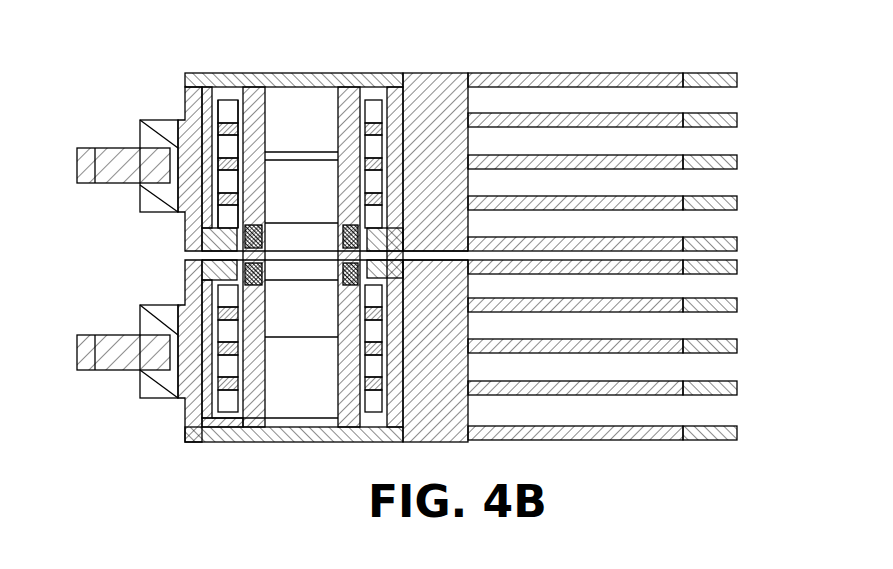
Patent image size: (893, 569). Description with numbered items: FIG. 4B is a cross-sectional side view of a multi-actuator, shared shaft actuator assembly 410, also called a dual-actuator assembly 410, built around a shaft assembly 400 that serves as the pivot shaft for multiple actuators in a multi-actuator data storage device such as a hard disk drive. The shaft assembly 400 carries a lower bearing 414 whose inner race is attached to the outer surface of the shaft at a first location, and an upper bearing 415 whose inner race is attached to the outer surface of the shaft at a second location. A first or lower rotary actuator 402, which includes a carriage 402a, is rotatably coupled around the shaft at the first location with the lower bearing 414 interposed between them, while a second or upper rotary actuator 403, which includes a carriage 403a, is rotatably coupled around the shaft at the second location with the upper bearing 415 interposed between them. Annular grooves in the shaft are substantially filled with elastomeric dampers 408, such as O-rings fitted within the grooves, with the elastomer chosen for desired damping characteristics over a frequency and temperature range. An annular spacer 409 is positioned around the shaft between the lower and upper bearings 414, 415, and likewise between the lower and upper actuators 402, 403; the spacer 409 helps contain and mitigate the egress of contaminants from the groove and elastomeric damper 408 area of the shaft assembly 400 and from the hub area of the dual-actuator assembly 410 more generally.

The shaft assembly 400 is at (267, 108).
The lower rotary actuator 402 is at (125, 370).
The carriage 402a is at (450, 440).
The upper rotary actuator 403 is at (130, 150).
The carriage 403a is at (456, 72).
The elastomeric damper 408 is at (342, 232).
The annular spacer 409 is at (243, 256).
The multi-actuator shared shaft actuator assembly 410 is at (466, 46).
The lower bearing 414 is at (352, 440).
The upper bearing 415 is at (244, 110).